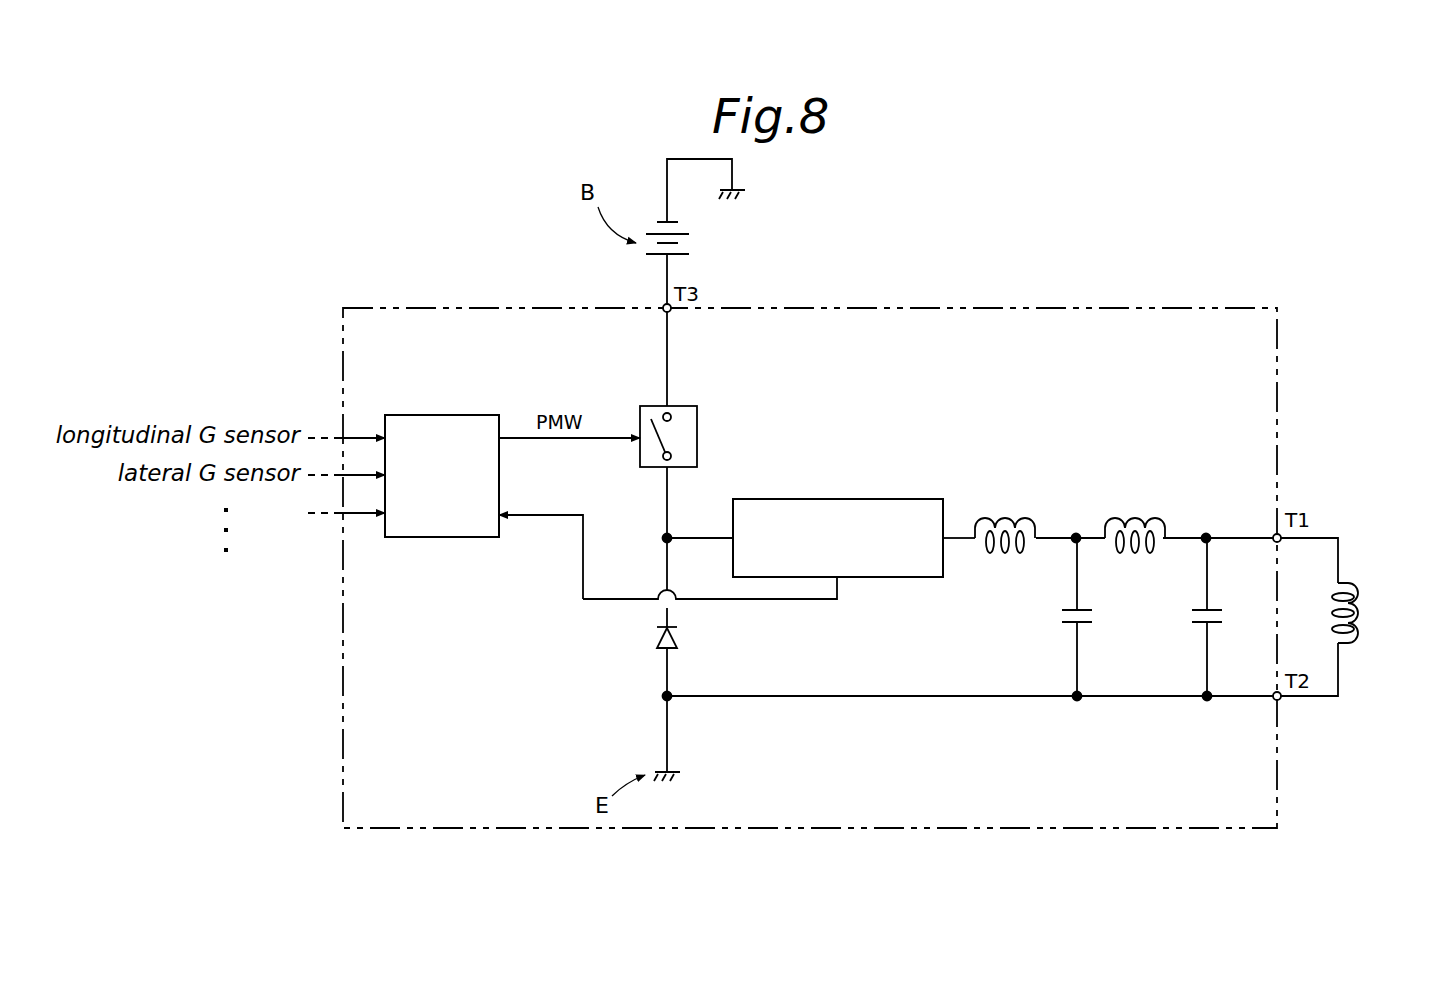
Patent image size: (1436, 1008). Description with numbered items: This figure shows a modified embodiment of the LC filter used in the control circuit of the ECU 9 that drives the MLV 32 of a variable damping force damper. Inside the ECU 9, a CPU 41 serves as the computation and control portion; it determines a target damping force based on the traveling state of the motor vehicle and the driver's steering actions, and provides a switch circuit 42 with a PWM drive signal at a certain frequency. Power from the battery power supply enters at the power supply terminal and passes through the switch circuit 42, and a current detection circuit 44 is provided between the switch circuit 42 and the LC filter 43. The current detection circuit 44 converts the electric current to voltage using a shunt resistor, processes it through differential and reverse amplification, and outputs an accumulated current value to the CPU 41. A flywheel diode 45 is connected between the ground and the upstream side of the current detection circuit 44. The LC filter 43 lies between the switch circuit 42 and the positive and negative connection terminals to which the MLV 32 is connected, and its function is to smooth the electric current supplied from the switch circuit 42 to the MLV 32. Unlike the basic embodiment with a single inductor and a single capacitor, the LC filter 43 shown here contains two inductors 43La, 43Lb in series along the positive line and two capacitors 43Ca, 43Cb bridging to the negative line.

The ECU 9 is at (1007, 290).
The CPU 41 is at (458, 540).
The switch circuit 42 is at (697, 442).
The LC filter 43 is at (972, 536).
The inductor 43La is at (1012, 518).
The inductor 43Lb is at (1140, 518).
The capacitor 43Ca is at (1060, 614).
The capacitor 43Cb is at (1189, 614).
The current detection circuit 44 is at (885, 499).
The flywheel diode 45 is at (656, 637).
The MLV 32 is at (1366, 611).